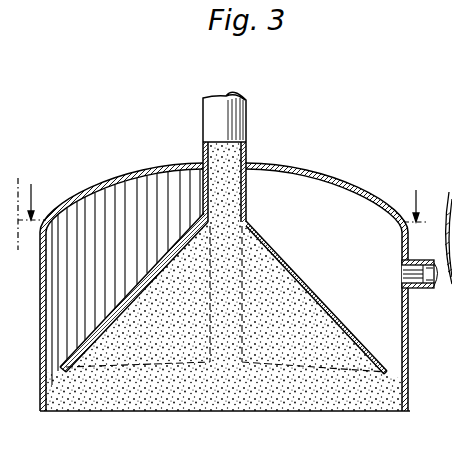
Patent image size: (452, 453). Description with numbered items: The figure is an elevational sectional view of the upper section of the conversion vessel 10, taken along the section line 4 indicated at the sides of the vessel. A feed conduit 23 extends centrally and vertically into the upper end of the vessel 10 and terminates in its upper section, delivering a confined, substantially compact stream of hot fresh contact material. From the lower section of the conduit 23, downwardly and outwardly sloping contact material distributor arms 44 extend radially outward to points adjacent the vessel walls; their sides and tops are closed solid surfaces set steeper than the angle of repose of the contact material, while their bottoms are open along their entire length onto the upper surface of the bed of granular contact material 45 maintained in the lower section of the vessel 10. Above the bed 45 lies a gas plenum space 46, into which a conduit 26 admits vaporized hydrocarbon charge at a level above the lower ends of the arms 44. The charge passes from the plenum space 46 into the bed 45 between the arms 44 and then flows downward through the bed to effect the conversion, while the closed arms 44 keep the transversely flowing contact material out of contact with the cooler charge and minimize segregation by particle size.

The section line 4- 4 is at (223, 214).
The conversion vessel 10 is at (42, 402).
The feed conduit 23 is at (203, 110).
The conduit for vaporized hydrocarbon charge 26 is at (429, 289).
The contact material distributor arms 44 is at (300, 283).
The bed of granular contact material 45 is at (82, 400).
The gas plenum space 46 is at (311, 184).